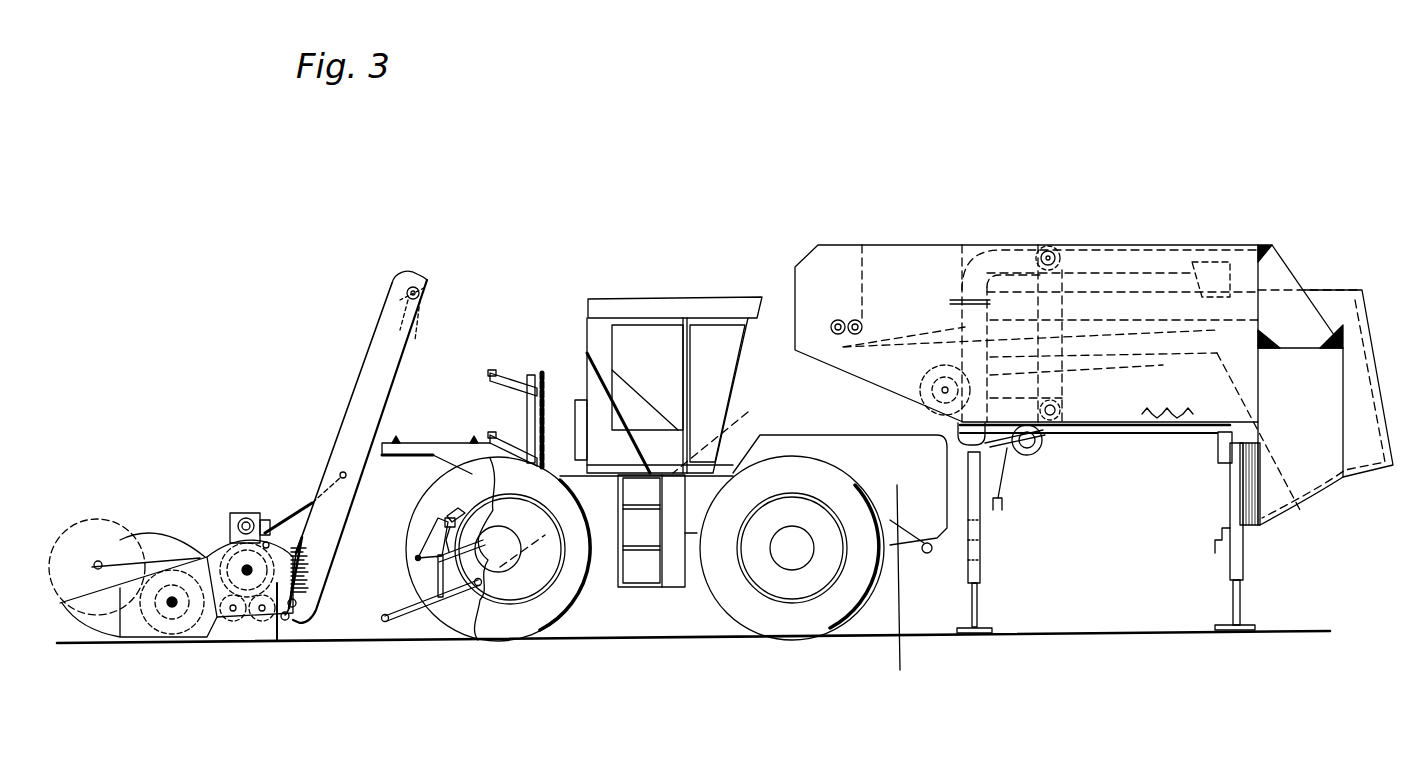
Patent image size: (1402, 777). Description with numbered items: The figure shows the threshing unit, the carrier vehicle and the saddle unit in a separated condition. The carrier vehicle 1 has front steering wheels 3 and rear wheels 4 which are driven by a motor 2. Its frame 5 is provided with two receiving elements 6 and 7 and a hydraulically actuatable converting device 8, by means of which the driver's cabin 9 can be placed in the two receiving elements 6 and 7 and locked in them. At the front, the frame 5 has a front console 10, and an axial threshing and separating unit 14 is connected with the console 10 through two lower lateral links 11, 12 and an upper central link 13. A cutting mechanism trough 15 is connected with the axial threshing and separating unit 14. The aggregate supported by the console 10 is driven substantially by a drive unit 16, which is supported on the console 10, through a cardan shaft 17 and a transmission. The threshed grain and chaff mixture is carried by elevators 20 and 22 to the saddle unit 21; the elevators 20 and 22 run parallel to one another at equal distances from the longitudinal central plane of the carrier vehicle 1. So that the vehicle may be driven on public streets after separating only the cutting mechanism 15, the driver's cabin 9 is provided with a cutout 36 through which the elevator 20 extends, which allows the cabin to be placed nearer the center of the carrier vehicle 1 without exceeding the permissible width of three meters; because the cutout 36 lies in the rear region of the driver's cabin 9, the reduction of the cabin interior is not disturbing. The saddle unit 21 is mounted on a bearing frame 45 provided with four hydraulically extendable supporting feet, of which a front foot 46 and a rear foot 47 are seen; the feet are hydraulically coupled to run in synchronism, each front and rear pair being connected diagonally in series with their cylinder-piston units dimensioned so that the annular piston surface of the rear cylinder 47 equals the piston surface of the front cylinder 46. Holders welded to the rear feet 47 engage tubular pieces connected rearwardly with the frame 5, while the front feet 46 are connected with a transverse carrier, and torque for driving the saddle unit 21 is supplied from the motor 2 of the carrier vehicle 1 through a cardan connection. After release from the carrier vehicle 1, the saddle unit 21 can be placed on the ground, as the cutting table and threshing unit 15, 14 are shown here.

The carrier vehicle 1 is at (731, 290).
The motor 2 is at (896, 599).
The front steering wheels 3 is at (563, 605).
The rear wheels 4 is at (722, 597).
The frame 5 is at (692, 505).
The receiving element 6 is at (473, 440).
The receiving element 7 is at (718, 427).
The hydraulically actuatable converting device 8 is at (548, 393).
The driver's cabin 9 is at (634, 302).
The front console 10 is at (462, 598).
The lower lateral link 11 is at (422, 654).
The lower lateral link 12 is at (408, 610).
The upper central link 13 is at (387, 590).
The axial threshing and separating unit 14 is at (220, 541).
The cutting mechanism trough 15 is at (153, 572).
The drive unit 16 is at (458, 510).
The cardan shaft 17 is at (448, 522).
The elevator 20 is at (346, 447).
The saddle unit 21 is at (1050, 246).
The elevator 22 is at (413, 313).
The cutout 36 is at (598, 411).
The bearing frame 45 is at (1123, 428).
The supporting foot 46 is at (983, 623).
The supporting foot 47 is at (1220, 623).